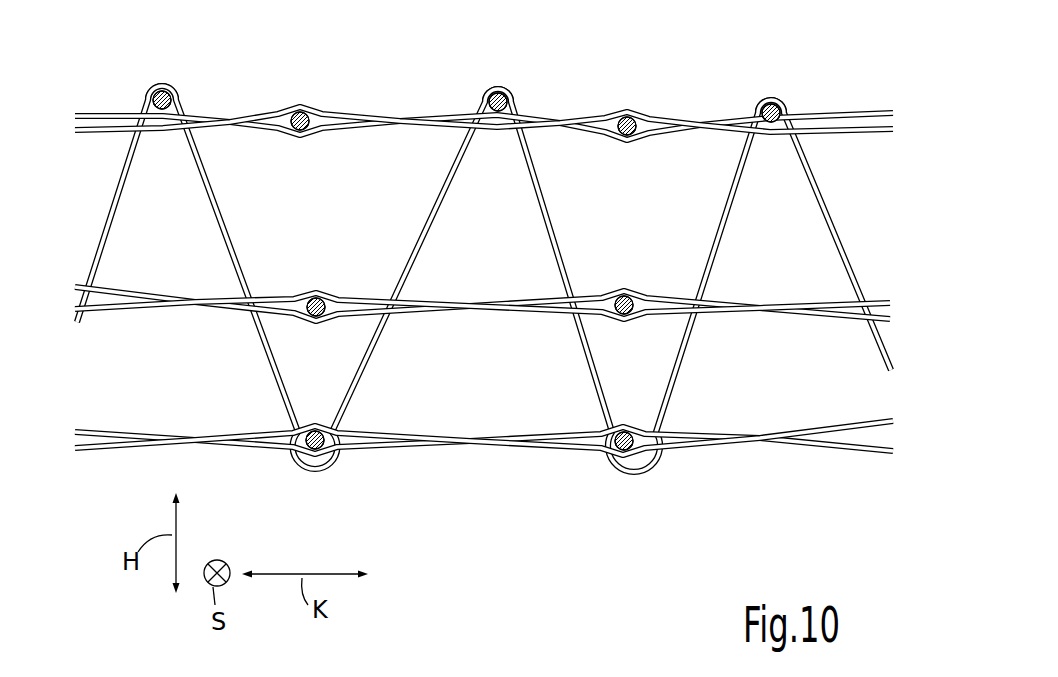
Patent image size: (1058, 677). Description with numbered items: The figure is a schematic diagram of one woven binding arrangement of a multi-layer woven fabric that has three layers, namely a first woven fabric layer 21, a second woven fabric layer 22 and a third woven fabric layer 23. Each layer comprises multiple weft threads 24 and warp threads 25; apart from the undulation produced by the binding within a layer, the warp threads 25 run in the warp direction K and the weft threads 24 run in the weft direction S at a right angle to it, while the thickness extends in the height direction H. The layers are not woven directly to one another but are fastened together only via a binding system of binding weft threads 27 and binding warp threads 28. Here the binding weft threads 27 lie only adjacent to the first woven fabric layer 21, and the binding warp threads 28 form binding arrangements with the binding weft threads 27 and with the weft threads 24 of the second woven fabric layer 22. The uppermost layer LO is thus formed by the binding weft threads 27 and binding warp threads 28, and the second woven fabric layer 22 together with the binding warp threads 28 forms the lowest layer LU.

The first woven fabric layer 21 is at (897, 115).
The second woven fabric layer 22 is at (896, 440).
The third woven fabric layer 23 is at (900, 308).
The weft threads 24 is at (316, 297).
The warp threads 25 is at (505, 277).
The binding weft threads 27 is at (521, 100).
The binding warp threads 28 is at (473, 103).